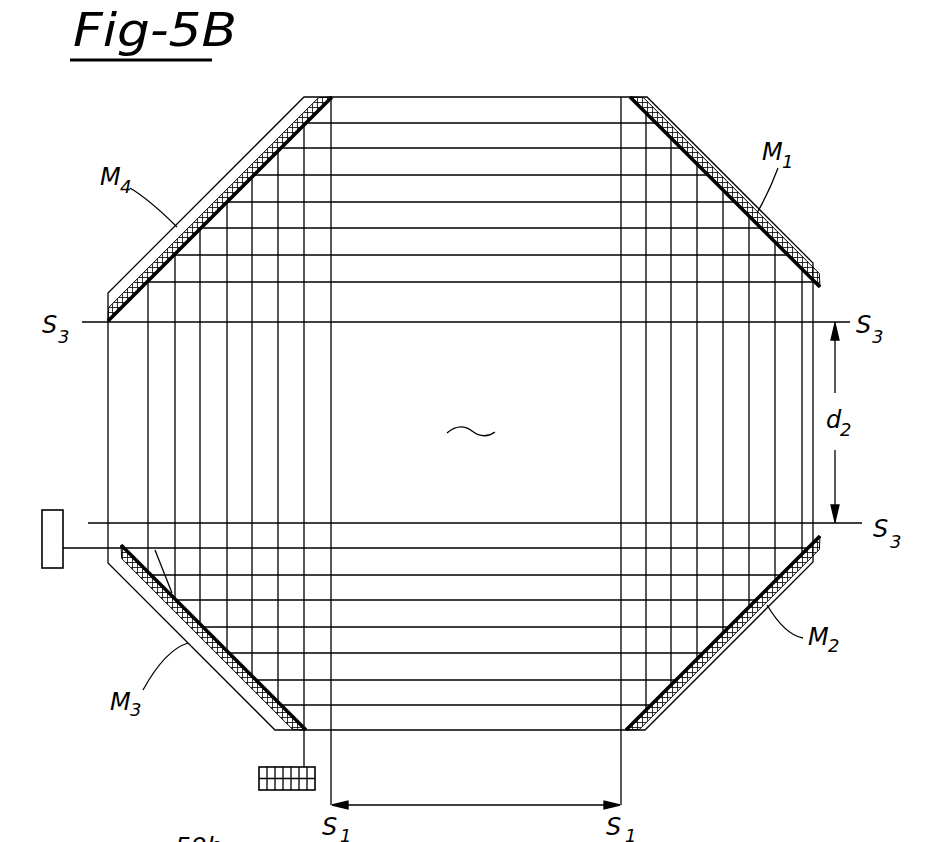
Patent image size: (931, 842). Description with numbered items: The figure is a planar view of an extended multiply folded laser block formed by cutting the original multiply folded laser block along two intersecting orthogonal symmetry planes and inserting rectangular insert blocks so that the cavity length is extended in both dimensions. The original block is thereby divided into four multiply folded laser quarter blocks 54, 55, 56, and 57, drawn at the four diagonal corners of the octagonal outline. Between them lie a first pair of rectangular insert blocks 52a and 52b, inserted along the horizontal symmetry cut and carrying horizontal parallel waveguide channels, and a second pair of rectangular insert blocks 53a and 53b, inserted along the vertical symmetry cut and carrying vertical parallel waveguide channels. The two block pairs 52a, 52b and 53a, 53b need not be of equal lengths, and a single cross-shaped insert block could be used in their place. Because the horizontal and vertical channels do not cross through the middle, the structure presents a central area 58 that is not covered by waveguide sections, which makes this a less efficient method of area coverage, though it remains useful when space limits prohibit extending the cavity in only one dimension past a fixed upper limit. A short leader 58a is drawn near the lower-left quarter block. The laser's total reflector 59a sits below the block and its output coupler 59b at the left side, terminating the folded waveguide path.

The rectangular insert block 52a is at (582, 137).
The rectangular insert block 52b is at (487, 718).
The rectangular insert block 53a is at (160, 400).
The rectangular insert block 53b is at (705, 383).
The multiply folded laser quarter block 54 is at (242, 208).
The multiply folded laser quarter block 55 is at (684, 190).
The multiply folded laser quarter block 56 is at (240, 640).
The multiply folded laser quarter block 57 is at (715, 613).
The central area 58 is at (471, 416).
The edge segment 58a is at (168, 622).
The total reflector 59a is at (250, 778).
The output coupler 59b is at (72, 533).